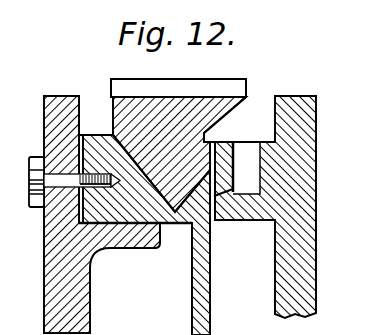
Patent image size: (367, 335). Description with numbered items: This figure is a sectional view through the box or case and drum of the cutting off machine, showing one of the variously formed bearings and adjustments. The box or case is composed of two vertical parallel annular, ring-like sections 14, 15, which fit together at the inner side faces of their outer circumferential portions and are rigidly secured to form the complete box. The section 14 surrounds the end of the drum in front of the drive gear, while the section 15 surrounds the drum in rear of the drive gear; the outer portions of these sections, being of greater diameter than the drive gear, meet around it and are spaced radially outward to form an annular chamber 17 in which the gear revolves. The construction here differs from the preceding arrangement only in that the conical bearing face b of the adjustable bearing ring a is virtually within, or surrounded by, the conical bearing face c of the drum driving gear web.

The box section 14 is at (53, 281).
The box section 15 is at (286, 263).
The annular chamber 17 is at (88, 118).
The adjustable bearing ring a is at (130, 214).
The conical bearing face b is at (150, 176).
The conical bearing face c is at (153, 225).